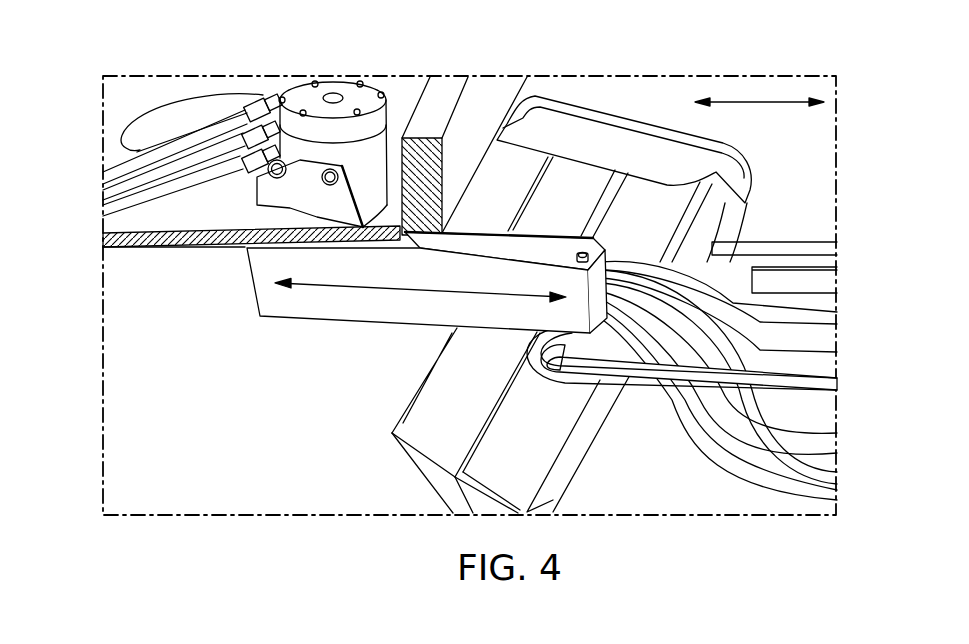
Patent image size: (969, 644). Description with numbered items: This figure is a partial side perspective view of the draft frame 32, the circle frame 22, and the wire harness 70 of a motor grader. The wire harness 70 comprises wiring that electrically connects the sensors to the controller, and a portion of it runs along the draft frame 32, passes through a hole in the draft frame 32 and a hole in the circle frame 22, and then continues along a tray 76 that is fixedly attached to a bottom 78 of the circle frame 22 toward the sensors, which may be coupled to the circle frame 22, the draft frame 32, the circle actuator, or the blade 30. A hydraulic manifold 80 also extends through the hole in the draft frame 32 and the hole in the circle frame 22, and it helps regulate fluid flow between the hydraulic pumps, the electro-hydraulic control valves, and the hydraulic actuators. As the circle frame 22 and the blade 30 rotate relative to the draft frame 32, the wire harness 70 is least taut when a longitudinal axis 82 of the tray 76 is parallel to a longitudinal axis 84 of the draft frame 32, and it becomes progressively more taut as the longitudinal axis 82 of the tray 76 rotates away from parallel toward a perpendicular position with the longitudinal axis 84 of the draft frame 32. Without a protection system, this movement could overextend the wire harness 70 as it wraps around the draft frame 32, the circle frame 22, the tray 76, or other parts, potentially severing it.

The circle frame 22 is at (178, 215).
The blade 30 is at (430, 470).
The draft frame 32 is at (497, 92).
The wire harness 70 is at (707, 307).
The tray 76 is at (377, 303).
The bottom of the circle frame 78 is at (222, 248).
The hydraulic manifold 80 is at (367, 95).
The longitudinal axis of the tray 82 is at (420, 292).
The longitudinal axis of the draft frame 84 is at (760, 102).